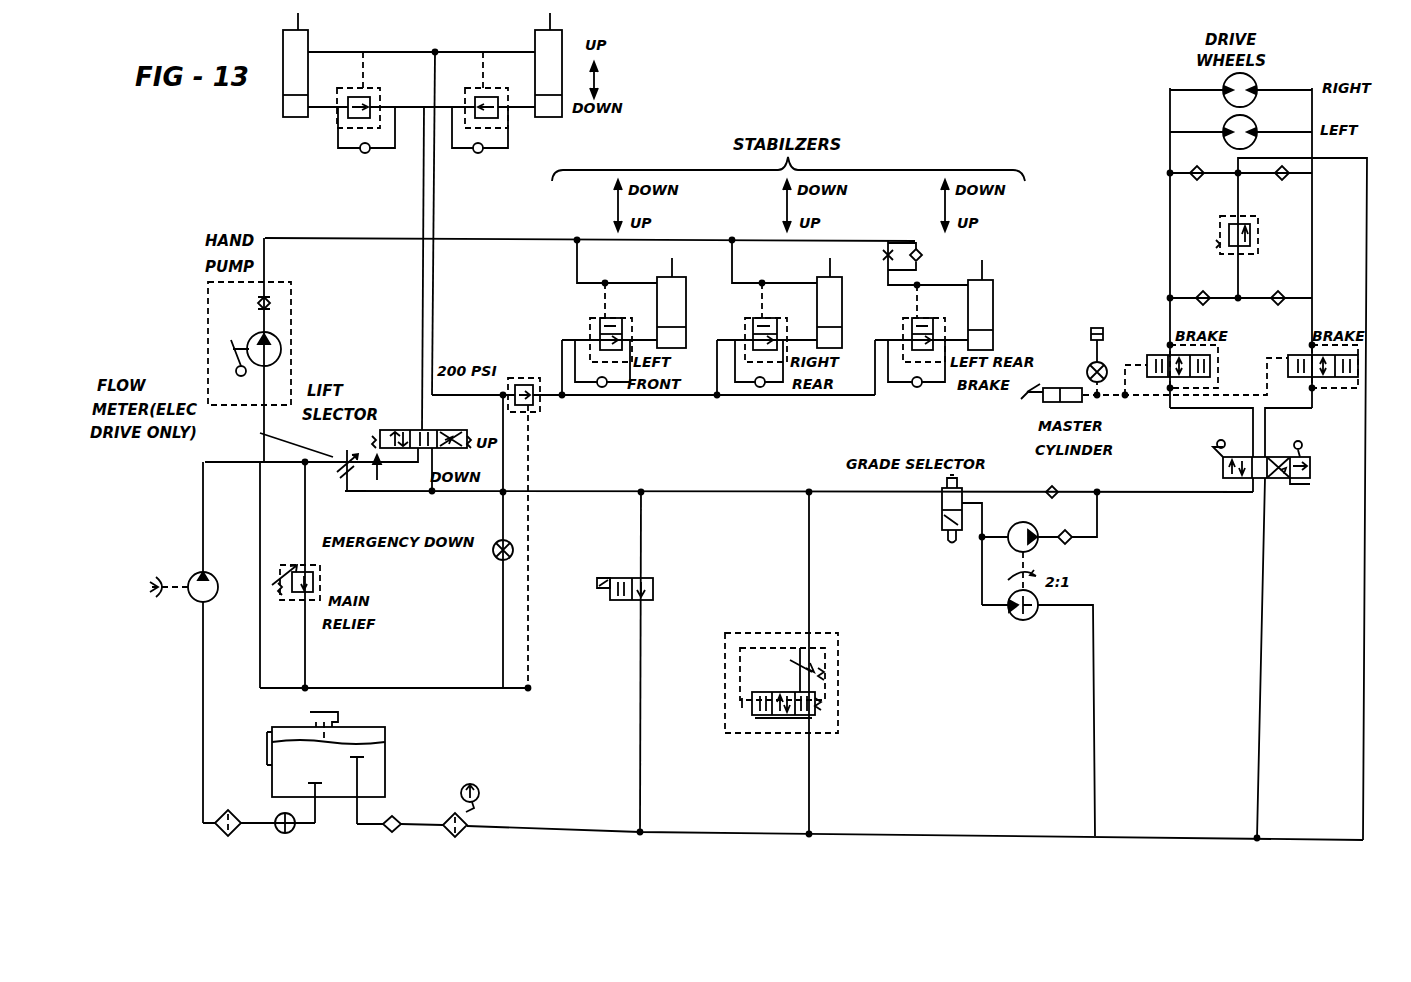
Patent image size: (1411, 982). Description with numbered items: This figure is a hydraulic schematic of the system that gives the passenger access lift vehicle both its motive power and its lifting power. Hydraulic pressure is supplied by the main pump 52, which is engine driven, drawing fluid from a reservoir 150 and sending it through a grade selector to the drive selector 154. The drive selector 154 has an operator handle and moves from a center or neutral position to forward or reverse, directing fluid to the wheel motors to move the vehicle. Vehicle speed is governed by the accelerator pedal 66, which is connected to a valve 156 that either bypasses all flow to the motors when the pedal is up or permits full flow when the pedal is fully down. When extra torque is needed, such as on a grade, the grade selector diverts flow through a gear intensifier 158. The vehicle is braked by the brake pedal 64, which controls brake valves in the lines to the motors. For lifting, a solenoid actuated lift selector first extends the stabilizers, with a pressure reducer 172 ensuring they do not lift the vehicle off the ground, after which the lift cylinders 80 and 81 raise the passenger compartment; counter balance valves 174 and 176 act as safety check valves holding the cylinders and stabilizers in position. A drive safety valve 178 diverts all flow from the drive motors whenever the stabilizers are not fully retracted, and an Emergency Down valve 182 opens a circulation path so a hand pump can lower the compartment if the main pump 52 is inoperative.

The lift cylinder 80 is at (308, 45).
The lift cylinder 81 is at (562, 38).
The counter balance valve 174 is at (453, 142).
The counter balance valve 176 is at (598, 378).
The pressure reducer 172 is at (535, 410).
The drive safety valve 178 is at (648, 578).
The Emergency Down valve 182 is at (493, 562).
The main pump 52 is at (200, 600).
The reservoir 150 is at (378, 772).
The valve 156 is at (764, 722).
The accelerator pedal 66 is at (853, 657).
The gear intensifier 158 is at (1040, 603).
The drive selector 154 is at (1278, 445).
The brake pedal 64 is at (1022, 395).